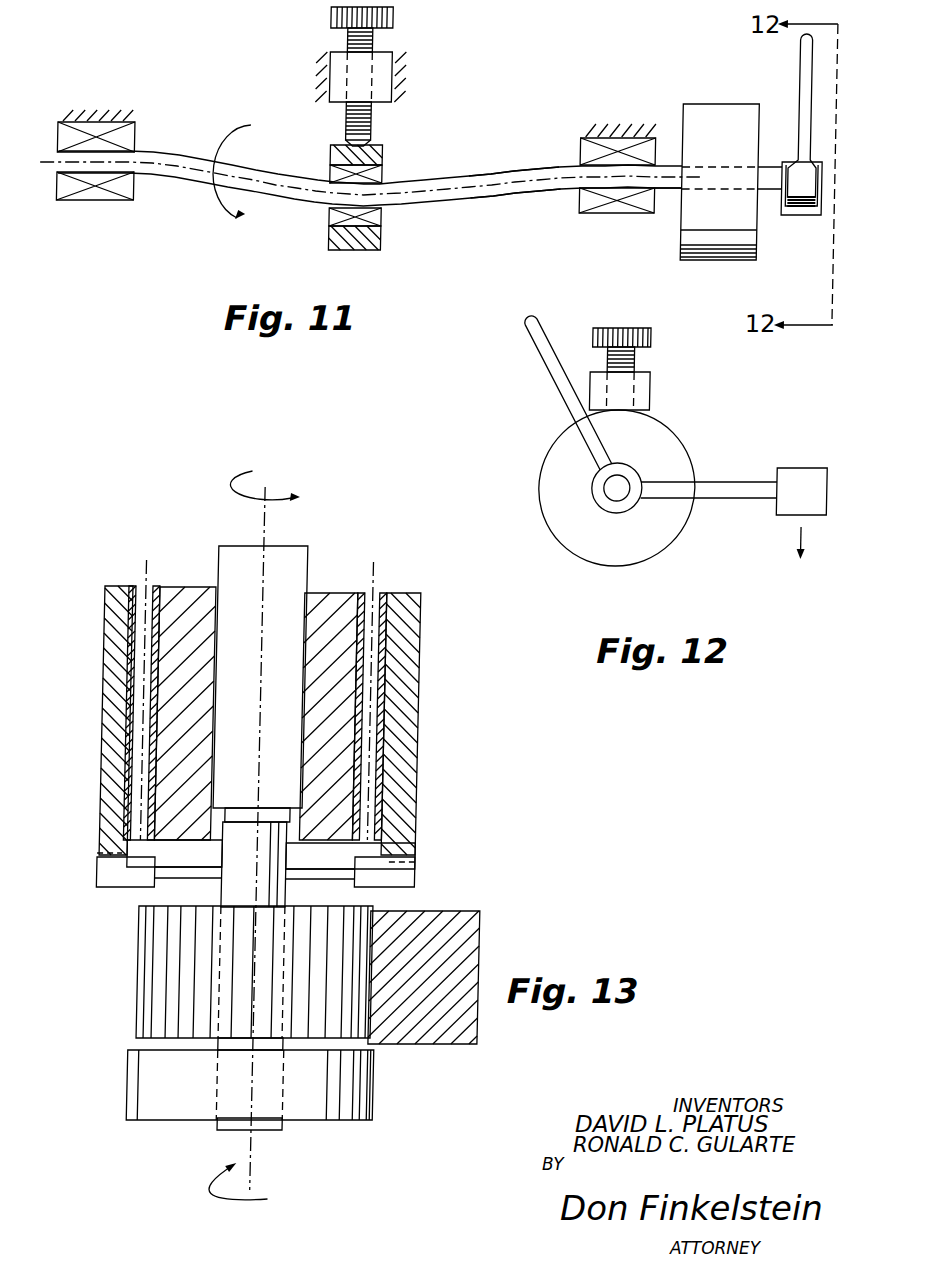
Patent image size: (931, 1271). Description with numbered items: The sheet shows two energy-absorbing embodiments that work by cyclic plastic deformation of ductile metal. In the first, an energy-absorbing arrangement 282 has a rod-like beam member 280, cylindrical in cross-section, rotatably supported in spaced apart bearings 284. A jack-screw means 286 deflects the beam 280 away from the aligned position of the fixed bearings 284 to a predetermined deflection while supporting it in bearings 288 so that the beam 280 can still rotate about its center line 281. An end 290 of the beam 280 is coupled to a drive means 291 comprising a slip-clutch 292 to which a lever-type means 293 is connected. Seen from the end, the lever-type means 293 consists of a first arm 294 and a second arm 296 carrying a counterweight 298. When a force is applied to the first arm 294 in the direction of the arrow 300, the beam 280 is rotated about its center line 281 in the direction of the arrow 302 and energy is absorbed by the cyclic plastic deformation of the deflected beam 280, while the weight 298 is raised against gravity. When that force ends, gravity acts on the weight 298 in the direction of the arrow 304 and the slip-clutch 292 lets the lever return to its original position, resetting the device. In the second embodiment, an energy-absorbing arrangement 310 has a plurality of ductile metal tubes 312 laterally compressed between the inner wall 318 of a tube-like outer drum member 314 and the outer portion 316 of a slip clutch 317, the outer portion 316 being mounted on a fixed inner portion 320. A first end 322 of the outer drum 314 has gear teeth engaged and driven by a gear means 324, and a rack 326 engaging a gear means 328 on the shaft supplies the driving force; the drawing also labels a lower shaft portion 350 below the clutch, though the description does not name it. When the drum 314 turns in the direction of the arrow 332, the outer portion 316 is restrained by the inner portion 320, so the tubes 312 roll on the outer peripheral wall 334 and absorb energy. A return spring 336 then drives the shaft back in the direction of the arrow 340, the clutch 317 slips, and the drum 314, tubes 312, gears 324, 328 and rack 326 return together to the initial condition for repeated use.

In FIG. 11, the rod-like beam member 280 is at (508, 197).
In FIG. 11, the center line 281 is at (540, 184).
In FIG. 11, the energy-absorbing arrangement 282 is at (471, 49).
In FIG. 11, the bearings 284 is at (137, 125).
In FIG. 11, the jack-screw means 286 is at (330, 52).
In FIG. 11, the bearings 288 is at (383, 167).
In FIG. 11, the end 290 is at (670, 200).
In FIG. 11, the drive means 291 is at (722, 105).
In FIG. 11, the slip-clutch 292 is at (757, 233).
In FIG. 12, the slip-clutch 292 is at (667, 425).
In FIG. 11, the lever-type means 293 is at (798, 82).
In FIG. 12, the lever-type means 293 is at (533, 355).
In FIG. 12, the first arm 294 is at (558, 402).
In FIG. 12, the second arm 296 is at (753, 507).
In FIG. 12, the counterweight 298 is at (830, 453).
In FIG. 12, the arrow 300 is at (572, 291).
In FIG. 11, the arrow 302 is at (207, 186).
In FIG. 12, the arrow 304 is at (800, 558).
In FIG. 13, the energy-absorbing arrangement 310 is at (94, 468).
In FIG. 13, the ductile metal tubes 312 is at (135, 585).
In FIG. 13, the tube-like outer drum member 314 is at (423, 651).
In FIG. 13, the outer portion of slip clutch 316 is at (353, 592).
In FIG. 13, the slip clutch 317 is at (336, 583).
In FIG. 13, the inner wall 318 is at (136, 843).
In FIG. 13, the inner portion of clutch 320 is at (215, 585).
In FIG. 13, the first end 322 is at (103, 857).
In FIG. 13, the gear means 324 is at (104, 878).
In FIG. 13, the rack 326 is at (450, 912).
In FIG. 13, the gear means 328 is at (146, 962).
In FIG. 13, the arrow 332 is at (231, 482).
In FIG. 13, the outer peripheral wall 334 is at (157, 588).
In FIG. 13, the return spring 336 is at (141, 1058).
In FIG. 13, the arrow 340 is at (214, 1192).
In FIG. 13, the lower shaft 350 is at (294, 892).